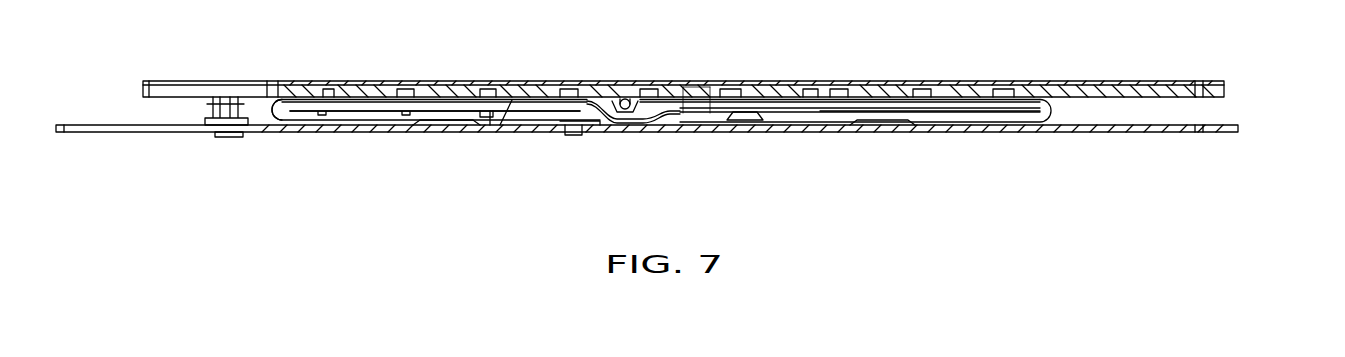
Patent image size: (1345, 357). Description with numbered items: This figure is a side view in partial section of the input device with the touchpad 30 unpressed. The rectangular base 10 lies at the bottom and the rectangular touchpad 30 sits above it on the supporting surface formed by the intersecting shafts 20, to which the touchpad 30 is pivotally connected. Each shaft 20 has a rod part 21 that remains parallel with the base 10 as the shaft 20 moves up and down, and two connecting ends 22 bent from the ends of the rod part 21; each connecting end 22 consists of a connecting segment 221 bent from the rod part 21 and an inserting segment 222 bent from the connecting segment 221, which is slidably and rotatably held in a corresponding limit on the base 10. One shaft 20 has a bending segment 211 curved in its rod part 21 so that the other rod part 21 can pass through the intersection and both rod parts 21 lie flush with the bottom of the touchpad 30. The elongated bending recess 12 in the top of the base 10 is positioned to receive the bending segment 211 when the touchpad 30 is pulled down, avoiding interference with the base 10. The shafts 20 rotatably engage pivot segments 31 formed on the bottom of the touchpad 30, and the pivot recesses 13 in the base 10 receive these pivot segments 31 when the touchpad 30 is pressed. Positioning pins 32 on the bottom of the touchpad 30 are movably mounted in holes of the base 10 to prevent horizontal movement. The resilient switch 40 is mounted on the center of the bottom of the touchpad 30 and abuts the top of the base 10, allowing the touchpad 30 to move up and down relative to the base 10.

The base 10 is at (1245, 128).
The touchpad 30 is at (1235, 88).
The bending recess 12 is at (577, 130).
The pivot recess 13 is at (491, 113).
The shaft 20 is at (813, 125).
The rod part 21 is at (747, 128).
The bending segment 211 is at (628, 121).
The connecting end 22 is at (268, 107).
The connecting segment 221 is at (273, 107).
The inserting segment 222 is at (347, 118).
The pivot segment 31 is at (488, 116).
The positioning pin 32 is at (222, 104).
The switch 40 is at (683, 132).